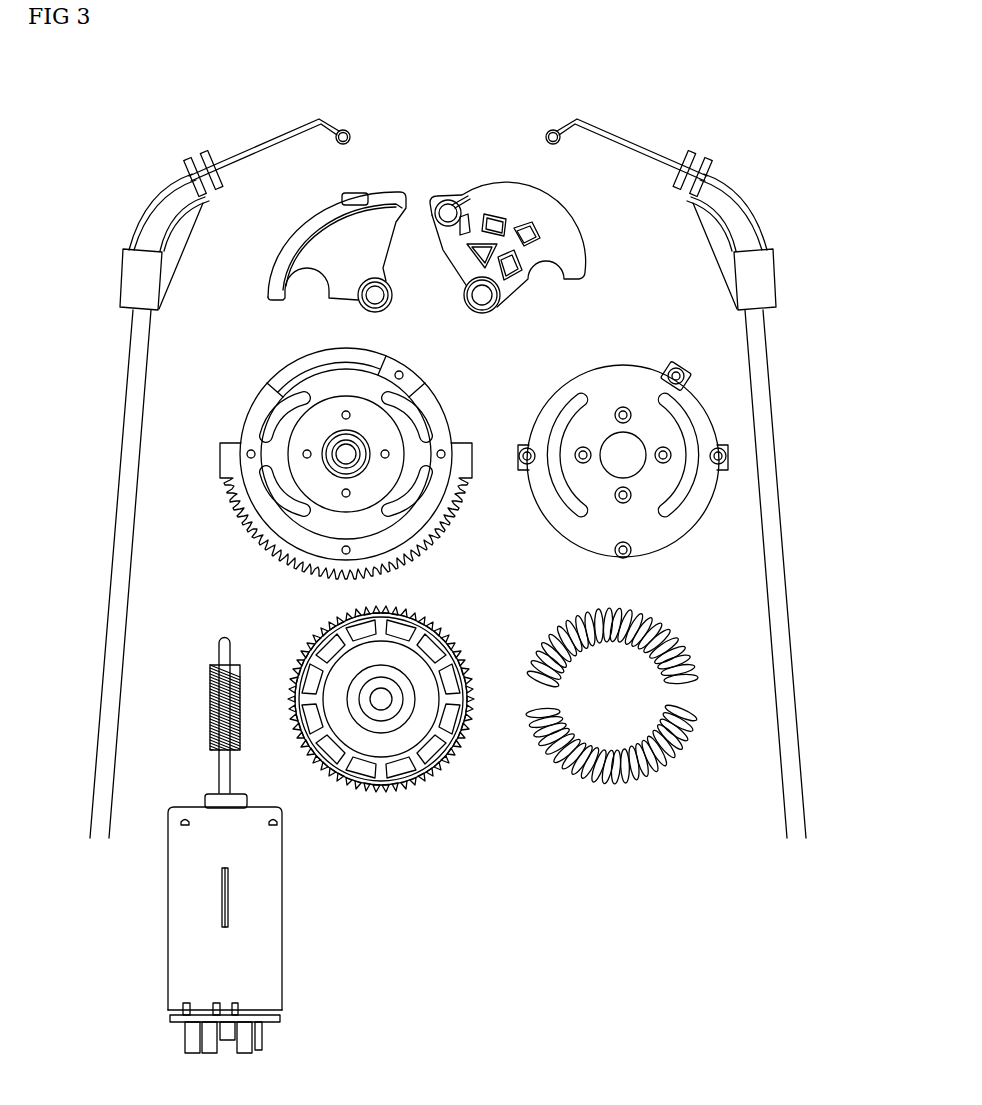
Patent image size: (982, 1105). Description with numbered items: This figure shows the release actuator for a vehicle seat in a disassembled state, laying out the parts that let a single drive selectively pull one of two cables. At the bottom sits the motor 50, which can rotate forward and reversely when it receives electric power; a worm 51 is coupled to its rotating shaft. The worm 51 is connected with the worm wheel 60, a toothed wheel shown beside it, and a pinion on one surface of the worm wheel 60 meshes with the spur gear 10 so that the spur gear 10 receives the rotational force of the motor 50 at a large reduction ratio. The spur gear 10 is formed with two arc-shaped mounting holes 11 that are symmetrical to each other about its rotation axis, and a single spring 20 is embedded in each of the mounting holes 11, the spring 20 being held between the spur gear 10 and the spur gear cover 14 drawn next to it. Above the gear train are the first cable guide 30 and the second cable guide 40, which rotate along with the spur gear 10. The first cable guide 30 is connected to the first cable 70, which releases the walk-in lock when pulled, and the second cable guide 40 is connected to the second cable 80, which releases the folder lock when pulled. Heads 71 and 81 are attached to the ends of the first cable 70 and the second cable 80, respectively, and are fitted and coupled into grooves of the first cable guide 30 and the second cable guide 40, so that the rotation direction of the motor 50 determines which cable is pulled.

The spur gear 10 is at (272, 397).
The mounting holes 11 is at (400, 412).
The spur gear cover 14 is at (622, 373).
The spring 20 is at (615, 775).
The first cable guide 30 is at (485, 207).
The second cable guide 40 is at (378, 196).
The motor 50 is at (276, 933).
The worm 51 is at (212, 705).
The worm wheel 60 is at (400, 748).
The first cable 70 is at (125, 480).
The head 71 is at (343, 128).
The second cable 80 is at (777, 485).
The head 81 is at (552, 128).